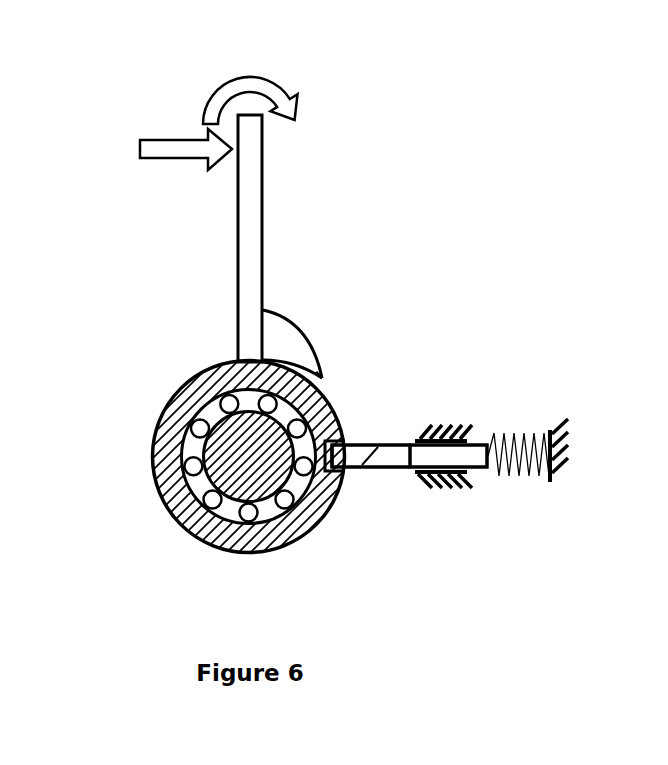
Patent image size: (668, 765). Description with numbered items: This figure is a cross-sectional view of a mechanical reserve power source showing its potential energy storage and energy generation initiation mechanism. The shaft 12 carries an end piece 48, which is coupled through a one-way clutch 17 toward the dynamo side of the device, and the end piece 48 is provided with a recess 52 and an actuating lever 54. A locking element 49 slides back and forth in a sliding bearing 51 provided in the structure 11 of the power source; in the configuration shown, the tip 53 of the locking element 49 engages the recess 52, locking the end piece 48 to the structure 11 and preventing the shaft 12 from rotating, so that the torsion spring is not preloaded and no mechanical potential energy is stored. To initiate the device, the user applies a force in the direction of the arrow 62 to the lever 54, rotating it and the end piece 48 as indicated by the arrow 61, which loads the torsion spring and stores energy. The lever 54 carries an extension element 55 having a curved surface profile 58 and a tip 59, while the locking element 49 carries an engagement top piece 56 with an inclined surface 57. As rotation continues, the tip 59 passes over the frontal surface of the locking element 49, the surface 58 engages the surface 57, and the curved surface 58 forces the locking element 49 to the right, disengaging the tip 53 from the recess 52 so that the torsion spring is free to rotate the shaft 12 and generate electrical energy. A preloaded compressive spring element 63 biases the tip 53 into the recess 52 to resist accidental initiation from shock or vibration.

The structure 11 is at (455, 495).
The shaft 12 is at (248, 458).
The one-way clutch 17 is at (192, 447).
The end piece 48 is at (177, 518).
The locking element 49 is at (466, 452).
The sliding bearing 51 is at (475, 472).
The recess 52 is at (340, 493).
The tip 53 is at (336, 450).
The actuating lever 54 is at (248, 245).
The extension element 55 is at (283, 340).
The engagement top piece 56 is at (398, 445).
The inclined surface 57 is at (362, 445).
The curved surface profile 58 is at (301, 337).
The tip 59 is at (326, 379).
The arrow 61 is at (250, 84).
The arrow 62 is at (162, 149).
The preloaded compressive spring element 63 is at (514, 433).